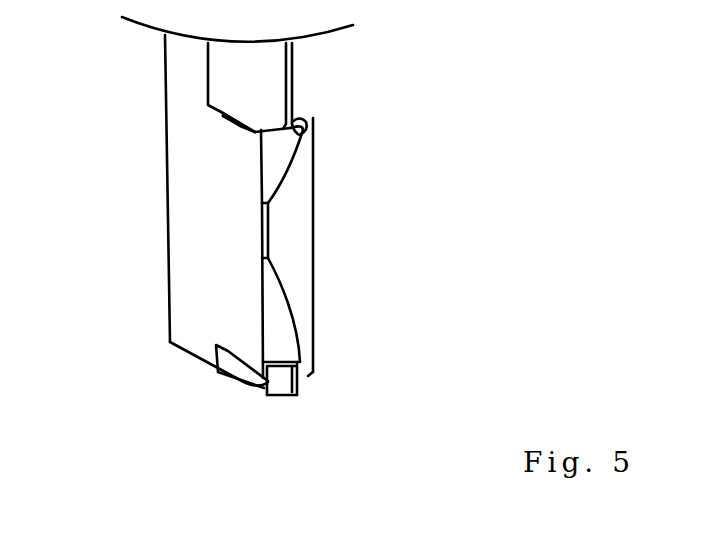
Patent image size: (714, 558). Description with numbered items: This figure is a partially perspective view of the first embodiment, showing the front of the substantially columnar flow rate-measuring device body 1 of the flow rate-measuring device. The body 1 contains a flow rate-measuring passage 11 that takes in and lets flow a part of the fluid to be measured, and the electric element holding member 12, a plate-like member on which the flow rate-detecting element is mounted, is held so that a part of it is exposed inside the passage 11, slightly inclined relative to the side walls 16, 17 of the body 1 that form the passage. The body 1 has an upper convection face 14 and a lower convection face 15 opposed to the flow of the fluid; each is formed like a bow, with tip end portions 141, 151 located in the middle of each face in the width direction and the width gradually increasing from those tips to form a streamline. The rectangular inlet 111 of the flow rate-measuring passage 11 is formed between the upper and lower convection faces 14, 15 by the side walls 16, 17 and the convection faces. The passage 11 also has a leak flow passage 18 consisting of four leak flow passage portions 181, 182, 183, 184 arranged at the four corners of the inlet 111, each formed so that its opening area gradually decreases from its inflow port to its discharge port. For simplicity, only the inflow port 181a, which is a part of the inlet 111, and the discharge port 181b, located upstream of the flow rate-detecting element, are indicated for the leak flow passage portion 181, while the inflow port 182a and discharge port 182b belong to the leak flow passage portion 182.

The flow rate-measuring device body 1 is at (182, 216).
The flow rate-measuring passage 11 is at (300, 233).
The inlet 111 is at (301, 210).
The electric element holding member 12 is at (262, 238).
The upper convection face 14 is at (237, 70).
The tip end portion 141 is at (292, 63).
The lower convection face 15 is at (282, 396).
The tip end portion 151 is at (300, 390).
The side wall 16 is at (262, 302).
The side wall 17 is at (315, 282).
The leak flow passage 18 is at (300, 122).
The leak flow passage portion 181 is at (271, 147).
The inflow port 181a is at (262, 150).
The discharge port 181b is at (226, 116).
The leak flow passage portion 182 is at (298, 128).
The inflow port 182a is at (270, 136).
The discharge port 182b is at (297, 125).
The leak flow passage portion 183 is at (270, 392).
The leak flow passage portion 184 is at (302, 366).